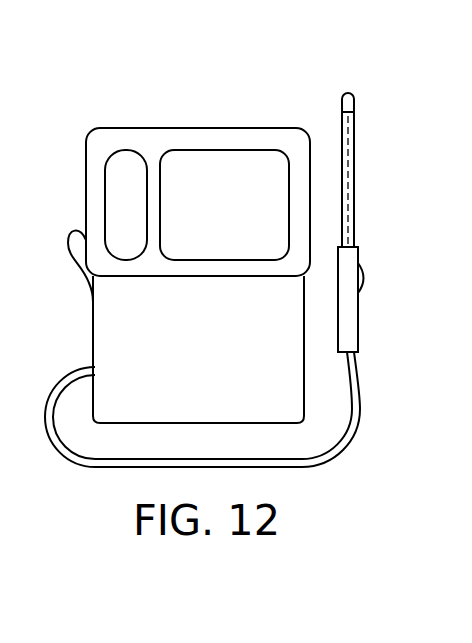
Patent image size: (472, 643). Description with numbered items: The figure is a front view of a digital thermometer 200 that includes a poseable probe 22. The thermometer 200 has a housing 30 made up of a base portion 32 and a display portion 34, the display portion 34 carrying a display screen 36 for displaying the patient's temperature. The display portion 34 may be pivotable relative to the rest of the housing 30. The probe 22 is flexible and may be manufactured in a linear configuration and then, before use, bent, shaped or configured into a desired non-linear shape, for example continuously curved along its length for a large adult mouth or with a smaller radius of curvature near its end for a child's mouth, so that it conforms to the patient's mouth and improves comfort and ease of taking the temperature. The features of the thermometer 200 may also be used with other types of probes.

The digital thermometer 200 is at (291, 55).
The housing 30 is at (100, 353).
The display portion 34 is at (133, 135).
The display screen 36 is at (191, 167).
The base portion 32 is at (292, 363).
The probe 22 is at (366, 157).